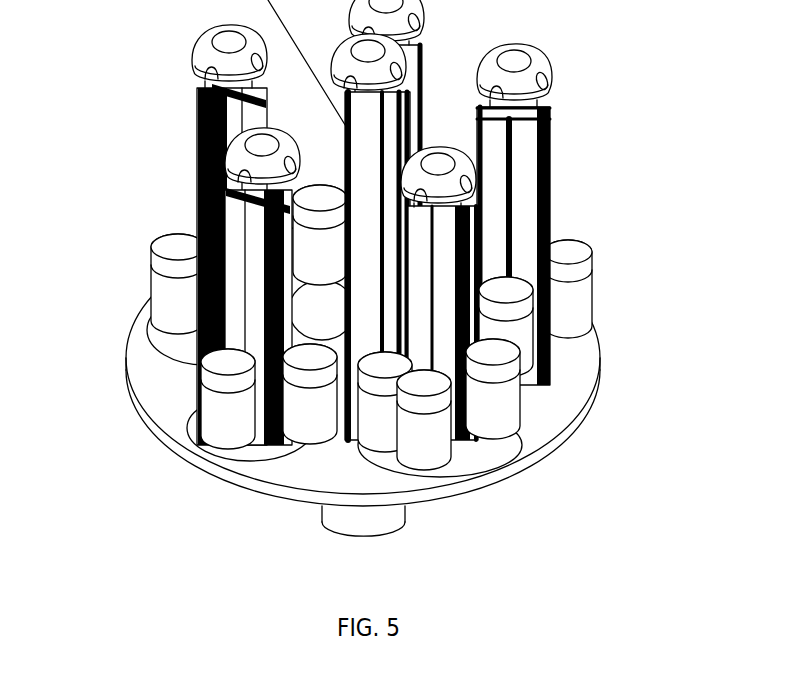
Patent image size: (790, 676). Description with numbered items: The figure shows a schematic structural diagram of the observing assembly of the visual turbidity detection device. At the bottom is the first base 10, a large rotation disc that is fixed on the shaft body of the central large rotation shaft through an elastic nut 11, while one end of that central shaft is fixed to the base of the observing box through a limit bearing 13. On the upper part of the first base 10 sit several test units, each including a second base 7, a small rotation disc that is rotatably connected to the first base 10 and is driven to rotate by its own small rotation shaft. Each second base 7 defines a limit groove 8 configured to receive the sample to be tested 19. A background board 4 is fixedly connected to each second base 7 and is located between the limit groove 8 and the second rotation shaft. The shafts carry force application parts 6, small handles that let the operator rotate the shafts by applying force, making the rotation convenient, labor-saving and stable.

The background board 4 is at (552, 156).
The force application part 6 is at (191, 61).
The second base 7 is at (598, 357).
The limit groove 8 is at (153, 330).
The first base 10 is at (139, 422).
The elastic nut 11 is at (358, 386).
The limit bearing 13 is at (405, 514).
The sample to be tested 19 is at (153, 252).